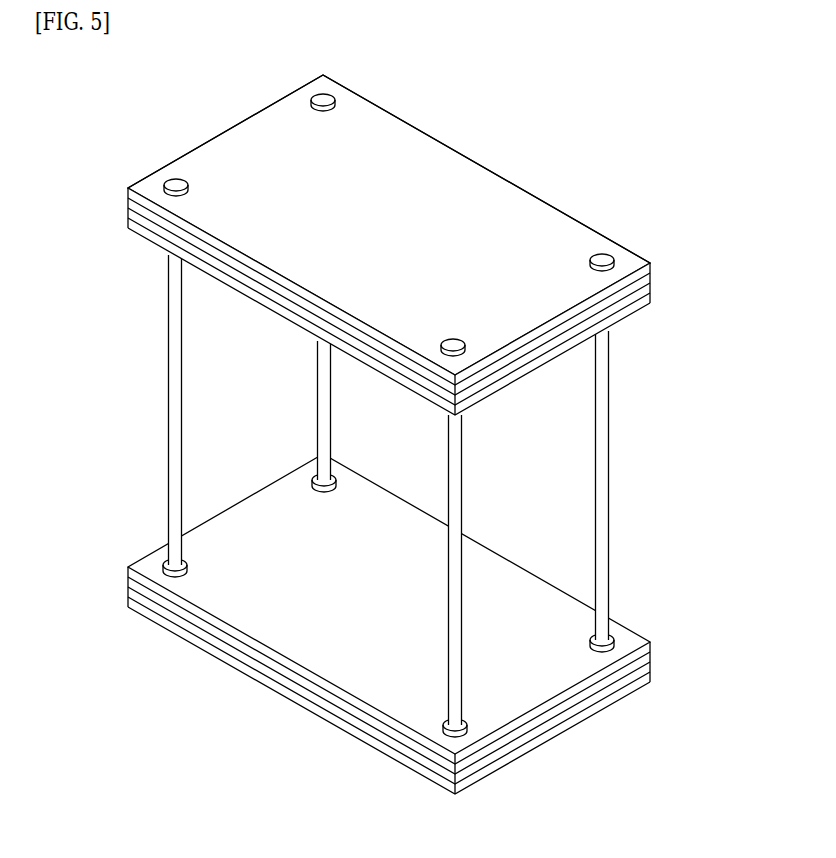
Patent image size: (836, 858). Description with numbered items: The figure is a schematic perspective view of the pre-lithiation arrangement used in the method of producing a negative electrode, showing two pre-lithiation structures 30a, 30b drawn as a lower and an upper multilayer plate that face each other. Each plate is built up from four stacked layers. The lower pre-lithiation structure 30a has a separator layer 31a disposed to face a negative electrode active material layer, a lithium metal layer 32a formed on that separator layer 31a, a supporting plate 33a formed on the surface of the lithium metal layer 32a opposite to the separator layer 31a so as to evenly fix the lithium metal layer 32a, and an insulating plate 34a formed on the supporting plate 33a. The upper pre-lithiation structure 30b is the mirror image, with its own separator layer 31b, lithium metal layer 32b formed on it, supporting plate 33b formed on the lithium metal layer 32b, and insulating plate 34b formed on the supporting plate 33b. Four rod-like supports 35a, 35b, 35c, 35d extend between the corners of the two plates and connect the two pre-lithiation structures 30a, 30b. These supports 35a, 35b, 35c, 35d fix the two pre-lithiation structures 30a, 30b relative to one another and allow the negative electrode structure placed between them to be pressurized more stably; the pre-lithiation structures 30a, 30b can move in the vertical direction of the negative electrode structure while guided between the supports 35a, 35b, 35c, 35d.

The pre-lithiation structure 30a is at (441, 624).
The separator layer 31a is at (652, 647).
The lithium metal layer 32a is at (652, 657).
The supporting plate 33a is at (652, 667).
The insulating plate 34a is at (703, 629).
The pre-lithiation structure 30b is at (441, 245).
The separator layer 31b is at (703, 250).
The lithium metal layer 32b is at (652, 288).
The supporting plate 33b is at (652, 278).
The insulating plate 34b is at (652, 268).
The support 35a is at (608, 482).
The support 35b is at (462, 459).
The support 35c is at (182, 395).
The support 35d is at (331, 411).